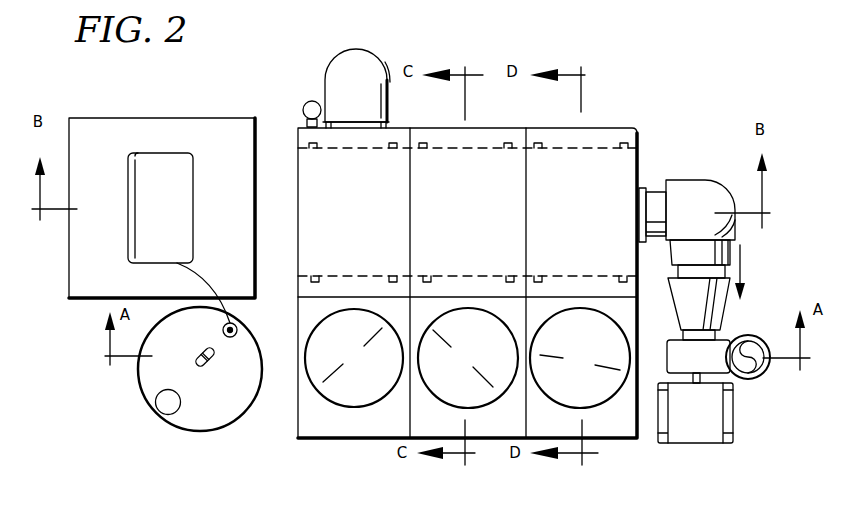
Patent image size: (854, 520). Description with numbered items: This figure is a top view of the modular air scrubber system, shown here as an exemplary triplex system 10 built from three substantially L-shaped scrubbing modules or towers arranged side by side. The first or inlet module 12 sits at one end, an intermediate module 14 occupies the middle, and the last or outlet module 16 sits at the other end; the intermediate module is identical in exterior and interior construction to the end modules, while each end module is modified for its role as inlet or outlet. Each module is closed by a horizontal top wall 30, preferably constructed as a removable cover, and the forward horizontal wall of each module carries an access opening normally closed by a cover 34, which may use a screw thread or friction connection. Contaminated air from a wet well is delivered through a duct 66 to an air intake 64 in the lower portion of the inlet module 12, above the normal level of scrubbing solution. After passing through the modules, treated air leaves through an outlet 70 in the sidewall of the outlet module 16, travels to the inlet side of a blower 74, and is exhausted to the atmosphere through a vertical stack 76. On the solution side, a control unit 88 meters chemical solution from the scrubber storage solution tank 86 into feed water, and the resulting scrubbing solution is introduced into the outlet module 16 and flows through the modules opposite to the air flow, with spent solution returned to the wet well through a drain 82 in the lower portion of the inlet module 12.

The triplex system 10 is at (190, 485).
The first or inlet module 12 is at (403, 122).
The intermediate module 14 is at (474, 123).
The last or outlet module 16 is at (605, 124).
The horizontal top wall 30 is at (349, 246).
The cover 34 is at (355, 400).
The air intake 64 is at (338, 132).
The duct 66 is at (378, 62).
The outlet 70 is at (643, 186).
The blower 74 is at (667, 352).
The vertical stack 76 is at (757, 381).
The drain 82 is at (297, 129).
The scrubber storage solution tank 86 is at (150, 378).
The control unit 88 is at (98, 230).